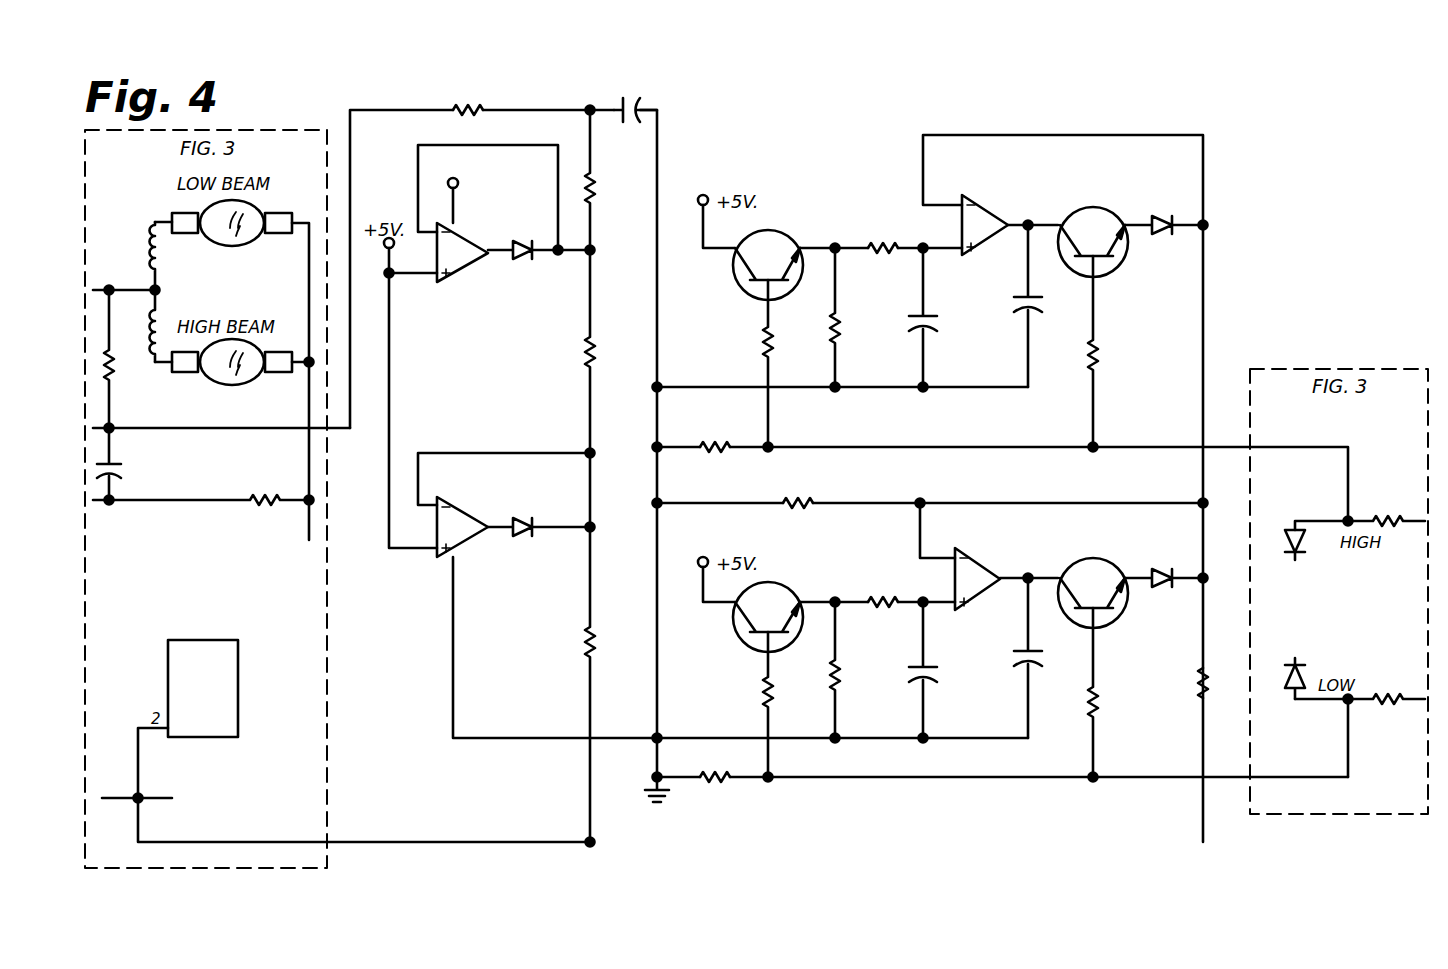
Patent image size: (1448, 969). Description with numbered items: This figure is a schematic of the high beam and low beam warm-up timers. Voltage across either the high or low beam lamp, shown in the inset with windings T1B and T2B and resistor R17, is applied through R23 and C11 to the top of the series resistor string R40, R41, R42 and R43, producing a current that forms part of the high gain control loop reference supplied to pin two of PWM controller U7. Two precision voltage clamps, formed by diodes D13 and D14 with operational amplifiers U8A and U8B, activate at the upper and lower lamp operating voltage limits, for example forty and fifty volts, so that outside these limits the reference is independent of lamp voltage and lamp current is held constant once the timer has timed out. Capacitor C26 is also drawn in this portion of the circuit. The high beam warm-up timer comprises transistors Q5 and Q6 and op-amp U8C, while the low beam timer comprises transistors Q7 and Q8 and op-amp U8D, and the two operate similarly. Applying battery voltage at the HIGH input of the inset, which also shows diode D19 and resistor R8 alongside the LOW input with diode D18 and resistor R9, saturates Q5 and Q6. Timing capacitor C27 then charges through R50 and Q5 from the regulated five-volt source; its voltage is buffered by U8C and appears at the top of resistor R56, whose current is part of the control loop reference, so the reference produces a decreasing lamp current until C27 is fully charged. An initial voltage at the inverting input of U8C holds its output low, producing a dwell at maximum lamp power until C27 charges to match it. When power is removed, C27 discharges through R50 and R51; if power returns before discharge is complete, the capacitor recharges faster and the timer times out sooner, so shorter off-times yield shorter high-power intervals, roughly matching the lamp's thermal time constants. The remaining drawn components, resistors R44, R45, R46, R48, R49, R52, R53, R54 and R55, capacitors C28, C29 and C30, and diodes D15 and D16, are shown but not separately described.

The low beam lamp transformer winding T1B is at (150, 238).
The high beam lamp transformer winding T2B is at (150, 330).
The resistor R17 is at (118, 371).
The capacitor C11 is at (121, 478).
The resistor R23 is at (267, 497).
The PWM controller U7 is at (203, 688).
The series string resistor R40 is at (470, 109).
The capacitor C26 is at (627, 102).
The series string resistor R41 is at (598, 192).
The series string resistor R42 is at (630, 338).
The series string resistor R43 is at (630, 618).
The operational amplifier U8A is at (488, 213).
The operational amplifier U8B is at (723, 595).
The clamp diode D13 is at (524, 241).
The clamp diode D14 is at (524, 510).
The transistor Q5 is at (768, 265).
The resistor R46 is at (764, 342).
The resistor R50 is at (880, 238).
The resistor R51 is at (841, 320).
The timing capacitor C27 is at (955, 309).
The operational amplifier U8C is at (1063, 488).
The capacitor C28 is at (1012, 304).
The transistor Q6 is at (1093, 242).
The diode D15 is at (1164, 213).
The resistor R54 is at (1099, 350).
The resistor R44 is at (728, 430).
The resistor R48 is at (808, 498).
The resistor R45 is at (716, 782).
The transistor Q7 is at (768, 617).
The resistor R49 is at (764, 690).
The resistor R52 is at (882, 596).
The resistor R53 is at (828, 675).
The capacitor C29 is at (908, 672).
The operational amplifier U8D is at (960, 556).
The capacitor C30 is at (1012, 660).
The transistor Q8 is at (1093, 593).
The diode D16 is at (1168, 568).
The resistor R55 is at (1099, 700).
The resistor R56 is at (1198, 688).
The high beam resistor R8 is at (1392, 518).
The low beam resistor R9 is at (1390, 694).
The high beam diode D19 is at (1304, 545).
The low beam diode D18 is at (1292, 667).